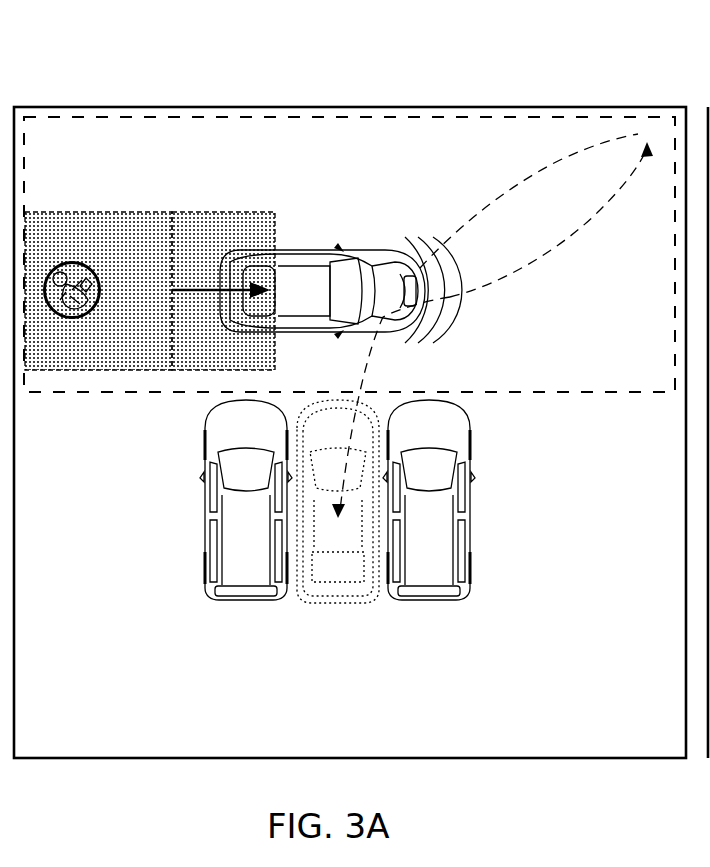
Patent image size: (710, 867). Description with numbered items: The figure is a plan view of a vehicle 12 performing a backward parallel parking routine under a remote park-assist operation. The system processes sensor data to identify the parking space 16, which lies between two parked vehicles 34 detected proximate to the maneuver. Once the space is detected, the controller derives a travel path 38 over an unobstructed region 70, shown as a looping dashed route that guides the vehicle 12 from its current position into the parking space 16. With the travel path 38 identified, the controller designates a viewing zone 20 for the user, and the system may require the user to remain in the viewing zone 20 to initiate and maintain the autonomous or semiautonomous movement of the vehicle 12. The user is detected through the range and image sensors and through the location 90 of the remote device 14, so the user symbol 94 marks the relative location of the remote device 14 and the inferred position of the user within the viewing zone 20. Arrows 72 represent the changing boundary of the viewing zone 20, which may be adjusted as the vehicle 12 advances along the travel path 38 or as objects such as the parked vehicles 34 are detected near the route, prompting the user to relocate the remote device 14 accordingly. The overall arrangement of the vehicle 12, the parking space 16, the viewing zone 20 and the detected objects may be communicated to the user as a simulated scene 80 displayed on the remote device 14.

The simulated scene 80 is at (538, 72).
The unobstructed region 70 is at (160, 140).
The viewing zone 20 is at (128, 232).
The arrows 72 is at (192, 212).
The remote device 14 is at (94, 312).
The user symbol 94 is at (54, 265).
The location of the remote device 90 is at (100, 302).
The vehicle 12 is at (310, 278).
The travel path 38 is at (495, 197).
The parked vehicle 34 is at (256, 543).
The parking space 16 is at (317, 598).